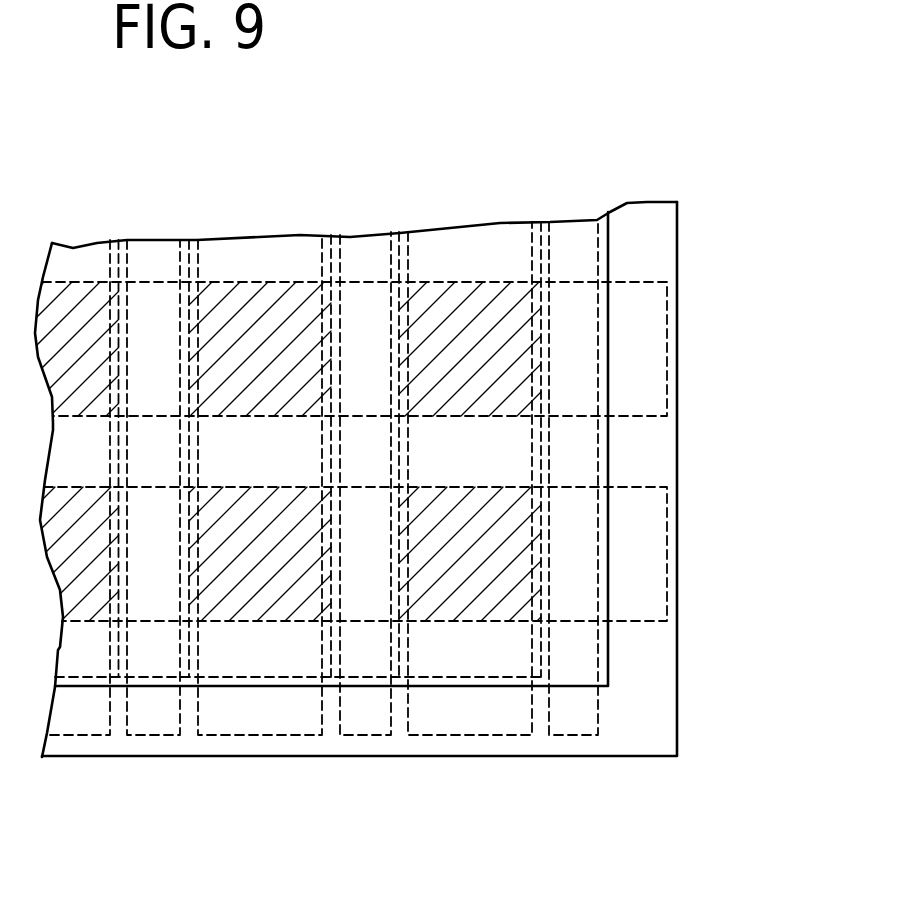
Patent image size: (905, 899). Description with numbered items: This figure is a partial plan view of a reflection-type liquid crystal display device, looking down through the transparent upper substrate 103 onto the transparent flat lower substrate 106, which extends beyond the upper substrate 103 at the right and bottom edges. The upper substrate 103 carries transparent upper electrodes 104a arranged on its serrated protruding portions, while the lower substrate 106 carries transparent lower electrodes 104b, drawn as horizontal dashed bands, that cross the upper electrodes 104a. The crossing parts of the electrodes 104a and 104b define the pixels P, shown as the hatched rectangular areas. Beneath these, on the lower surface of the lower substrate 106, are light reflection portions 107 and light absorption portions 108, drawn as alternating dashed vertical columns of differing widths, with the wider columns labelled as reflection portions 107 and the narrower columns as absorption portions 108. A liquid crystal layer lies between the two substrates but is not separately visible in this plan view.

The upper substrate 103 is at (608, 257).
The upper electrodes 104a is at (275, 680).
The lower electrodes 104b is at (667, 328).
The lower substrate 106 is at (678, 687).
The light reflection portions 107 is at (213, 737).
The light absorption portions 108 is at (147, 737).
The pixels P is at (254, 305).